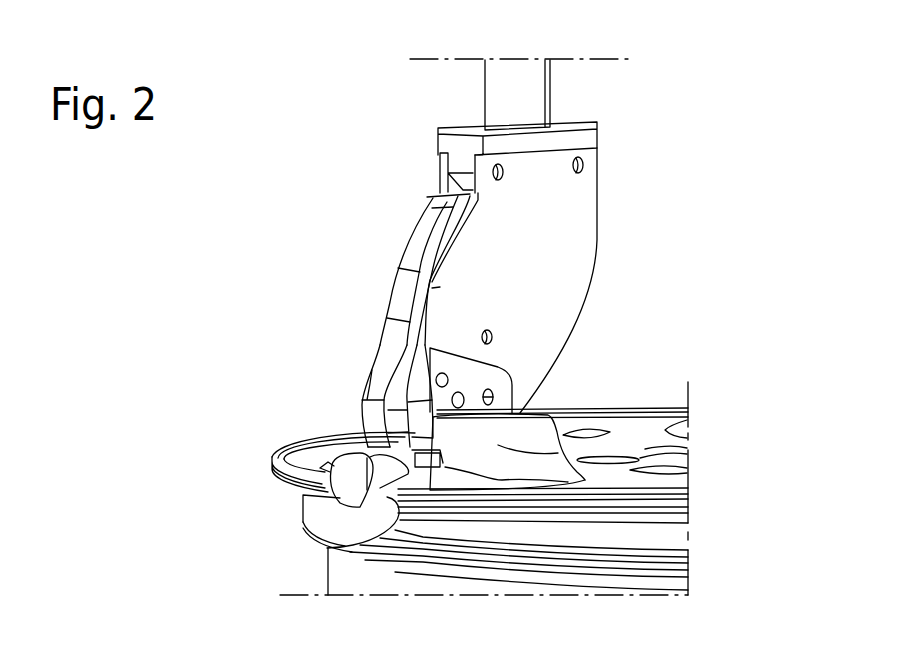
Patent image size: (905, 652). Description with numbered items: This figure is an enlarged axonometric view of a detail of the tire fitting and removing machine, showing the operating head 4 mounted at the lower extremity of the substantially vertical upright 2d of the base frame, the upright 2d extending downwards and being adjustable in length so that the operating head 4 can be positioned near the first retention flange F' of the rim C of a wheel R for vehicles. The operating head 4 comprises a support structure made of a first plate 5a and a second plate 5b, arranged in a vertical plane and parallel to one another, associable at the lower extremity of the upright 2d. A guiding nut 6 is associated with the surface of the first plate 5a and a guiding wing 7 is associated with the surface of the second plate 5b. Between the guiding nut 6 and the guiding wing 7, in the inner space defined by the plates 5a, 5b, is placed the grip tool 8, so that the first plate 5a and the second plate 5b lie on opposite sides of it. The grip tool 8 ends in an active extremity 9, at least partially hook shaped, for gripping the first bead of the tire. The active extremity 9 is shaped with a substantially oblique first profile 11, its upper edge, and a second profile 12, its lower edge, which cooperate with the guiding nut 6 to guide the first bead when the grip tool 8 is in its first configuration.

The upright 2d is at (522, 90).
The operating head 4 is at (622, 288).
The first plate 5a is at (445, 170).
The second plate 5b is at (537, 212).
The grip tool 8 is at (408, 292).
The first profile 11 is at (393, 452).
The guiding nut 6 is at (338, 457).
The active extremity 9 is at (397, 486).
The second profile 12 is at (328, 548).
The guiding wing 7 is at (568, 447).
The wheel R is at (637, 380).
The rim C is at (663, 452).
The first retention flange F' is at (231, 437).